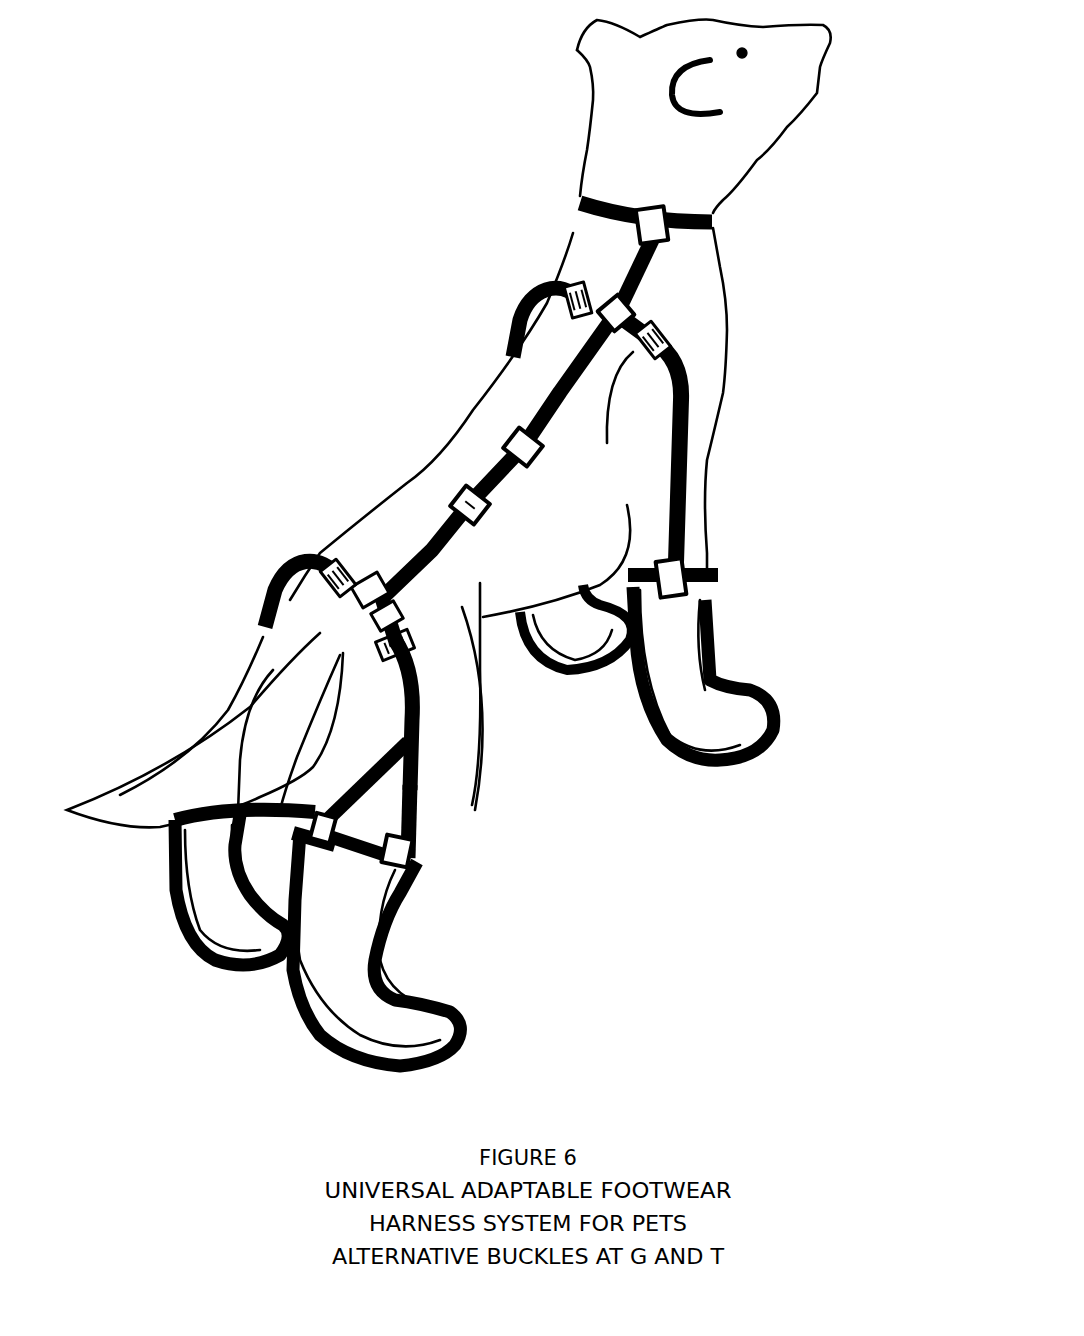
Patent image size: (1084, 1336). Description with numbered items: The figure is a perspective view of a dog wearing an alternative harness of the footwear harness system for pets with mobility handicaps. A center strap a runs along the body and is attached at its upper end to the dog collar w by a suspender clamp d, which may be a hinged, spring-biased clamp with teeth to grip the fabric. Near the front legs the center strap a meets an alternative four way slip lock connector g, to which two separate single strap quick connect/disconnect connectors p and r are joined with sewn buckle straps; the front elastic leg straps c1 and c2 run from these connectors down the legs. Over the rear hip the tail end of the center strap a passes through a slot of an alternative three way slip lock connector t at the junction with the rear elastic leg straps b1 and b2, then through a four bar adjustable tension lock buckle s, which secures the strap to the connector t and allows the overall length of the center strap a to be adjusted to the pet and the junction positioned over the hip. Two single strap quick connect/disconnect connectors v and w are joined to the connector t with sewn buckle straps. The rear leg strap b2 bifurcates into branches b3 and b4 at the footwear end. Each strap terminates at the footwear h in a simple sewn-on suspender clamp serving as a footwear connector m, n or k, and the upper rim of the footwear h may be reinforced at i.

The suspender clamp d is at (636, 212).
The dog collar / single strap quick connect/disconnect connector w is at (716, 221).
The center strap a is at (626, 262).
The front elastic leg strap c1 is at (550, 289).
The single strap quick connect/disconnect connector p is at (536, 305).
The four way slip lock connector g is at (635, 318).
The single strap quick connect/disconnect connector r is at (668, 336).
The front elastic leg strap c2 is at (690, 428).
The three way slip lock connector t is at (369, 562).
The four bar adjustable tension lock buckle s is at (472, 507).
The rear elastic leg strap b1 is at (313, 560).
The single strap quick connect/disconnect connector v is at (280, 600).
The footwear connector (suspender clamp) k is at (676, 578).
The reinforced upper rim i is at (697, 598).
The footwear h is at (680, 680).
The rear elastic leg strap b2 is at (420, 690).
The bifurcated branch b3 is at (352, 768).
The footwear connector (suspender clamp) m is at (320, 826).
The bifurcated branch b4 is at (420, 800).
The footwear connector (suspender clamp) n is at (420, 858).